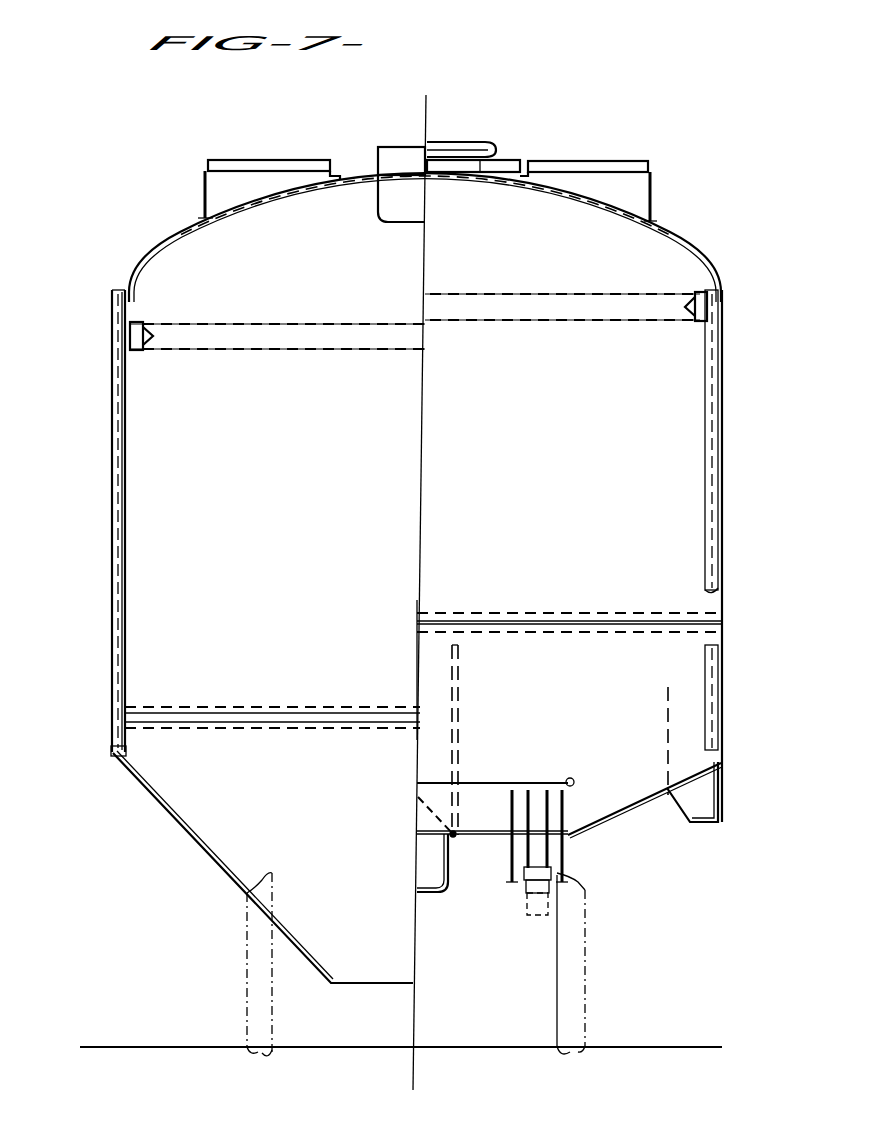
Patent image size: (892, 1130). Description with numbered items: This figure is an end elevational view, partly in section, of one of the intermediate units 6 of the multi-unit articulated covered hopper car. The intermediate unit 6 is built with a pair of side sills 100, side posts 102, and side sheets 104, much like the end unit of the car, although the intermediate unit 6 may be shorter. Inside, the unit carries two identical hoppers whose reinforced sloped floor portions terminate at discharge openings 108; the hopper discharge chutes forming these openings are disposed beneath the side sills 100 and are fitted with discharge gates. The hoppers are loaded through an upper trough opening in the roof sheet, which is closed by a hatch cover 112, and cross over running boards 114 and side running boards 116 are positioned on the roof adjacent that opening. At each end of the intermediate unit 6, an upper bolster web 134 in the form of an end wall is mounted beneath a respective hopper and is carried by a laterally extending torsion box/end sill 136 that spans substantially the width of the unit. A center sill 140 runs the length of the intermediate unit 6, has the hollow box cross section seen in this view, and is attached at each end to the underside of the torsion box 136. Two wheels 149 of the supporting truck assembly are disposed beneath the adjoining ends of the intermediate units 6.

The intermediate unit 6 is at (153, 242).
The side sill 100 is at (115, 759).
The side post 102 is at (113, 458).
The side sheet 104 is at (118, 357).
The discharge opening 108 is at (376, 985).
The hatch cover 112 is at (452, 143).
The cross over running board 114 is at (502, 163).
The side running board 116 is at (233, 170).
The upper bolster web 134 is at (624, 726).
The torsion box/end sill 136 is at (487, 812).
The center sill 140 is at (451, 880).
The wheel 149 is at (587, 957).